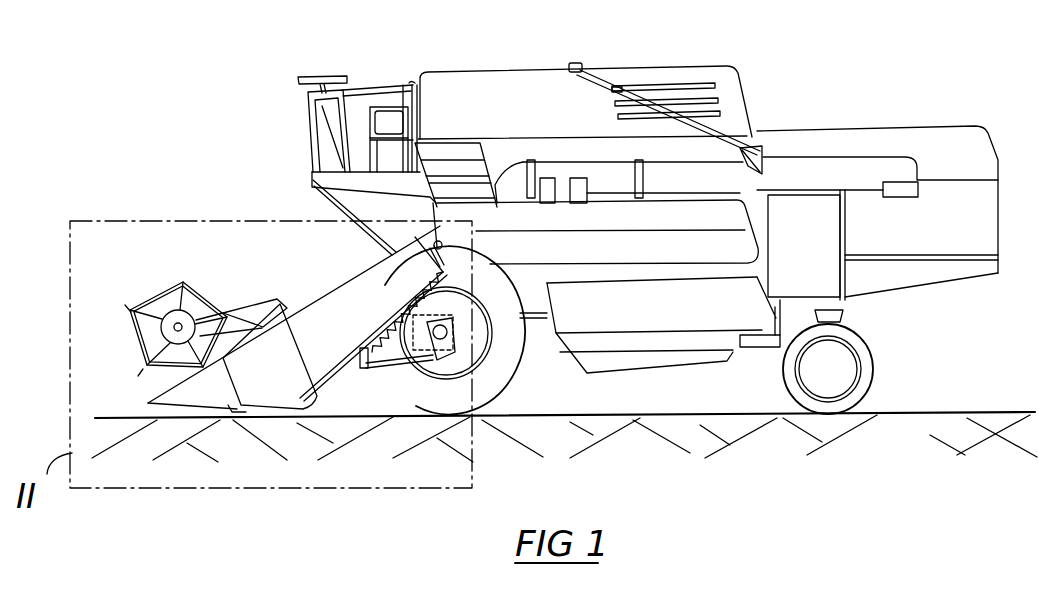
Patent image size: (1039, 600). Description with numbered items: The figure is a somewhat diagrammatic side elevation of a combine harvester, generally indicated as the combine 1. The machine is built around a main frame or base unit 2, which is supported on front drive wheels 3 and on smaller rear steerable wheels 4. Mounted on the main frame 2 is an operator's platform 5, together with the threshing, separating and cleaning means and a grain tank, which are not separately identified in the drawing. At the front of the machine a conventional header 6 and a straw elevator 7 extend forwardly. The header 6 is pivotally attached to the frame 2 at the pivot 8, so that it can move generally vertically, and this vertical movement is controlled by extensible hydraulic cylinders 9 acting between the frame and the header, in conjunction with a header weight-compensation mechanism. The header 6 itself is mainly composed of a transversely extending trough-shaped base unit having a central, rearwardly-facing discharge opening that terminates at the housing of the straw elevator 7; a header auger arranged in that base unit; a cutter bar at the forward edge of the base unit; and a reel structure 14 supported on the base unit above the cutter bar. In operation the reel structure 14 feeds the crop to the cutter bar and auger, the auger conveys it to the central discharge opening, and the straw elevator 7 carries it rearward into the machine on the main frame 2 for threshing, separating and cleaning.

The combine 1 is at (538, 57).
The main frame 2 is at (521, 315).
The front drive wheels 3 is at (512, 378).
The rear steerable wheels 4 is at (780, 377).
The operator's platform 5 is at (312, 177).
The header 6 is at (303, 399).
The straw elevator 7 is at (333, 292).
The pivotal attachment 8 is at (446, 245).
The extensible hydraulic cylinders 9 is at (388, 362).
The reel structure 14 is at (160, 294).